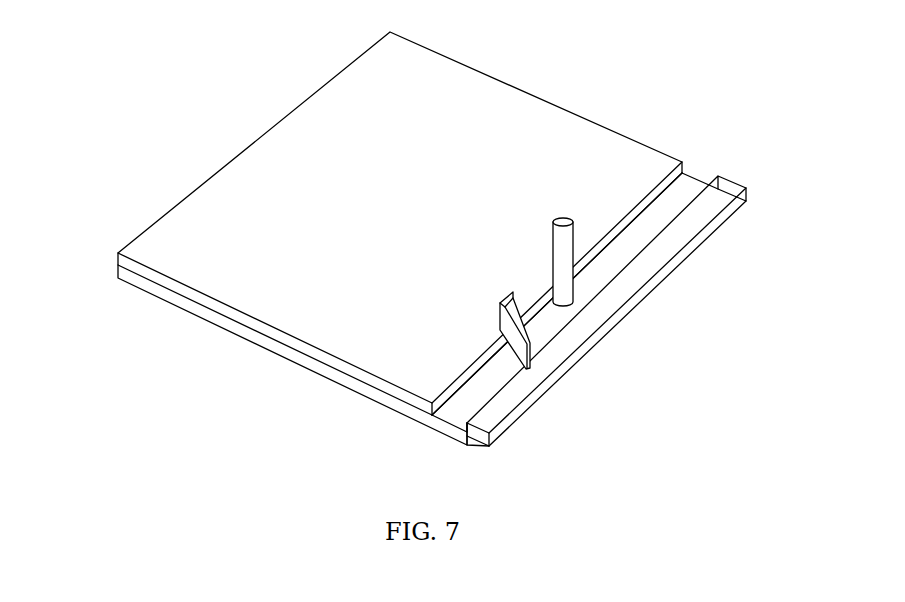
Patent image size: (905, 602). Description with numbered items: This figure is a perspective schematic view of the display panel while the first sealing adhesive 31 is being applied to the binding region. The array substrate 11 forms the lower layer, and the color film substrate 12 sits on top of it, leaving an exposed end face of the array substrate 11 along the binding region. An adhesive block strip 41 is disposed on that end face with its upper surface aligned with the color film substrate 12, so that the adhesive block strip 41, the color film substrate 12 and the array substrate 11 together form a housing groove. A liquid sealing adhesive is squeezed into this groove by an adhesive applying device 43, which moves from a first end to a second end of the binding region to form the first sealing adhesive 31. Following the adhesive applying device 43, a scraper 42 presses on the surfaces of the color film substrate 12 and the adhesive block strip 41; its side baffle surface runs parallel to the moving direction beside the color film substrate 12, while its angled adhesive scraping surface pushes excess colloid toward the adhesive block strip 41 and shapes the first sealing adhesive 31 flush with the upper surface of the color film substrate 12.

The array substrate 11 is at (138, 287).
The color film substrate 12 is at (140, 253).
The first sealing adhesive 31 is at (490, 380).
The adhesive block strip 41 is at (683, 232).
The scraper 42 is at (527, 333).
The adhesive applying device 43 is at (560, 291).